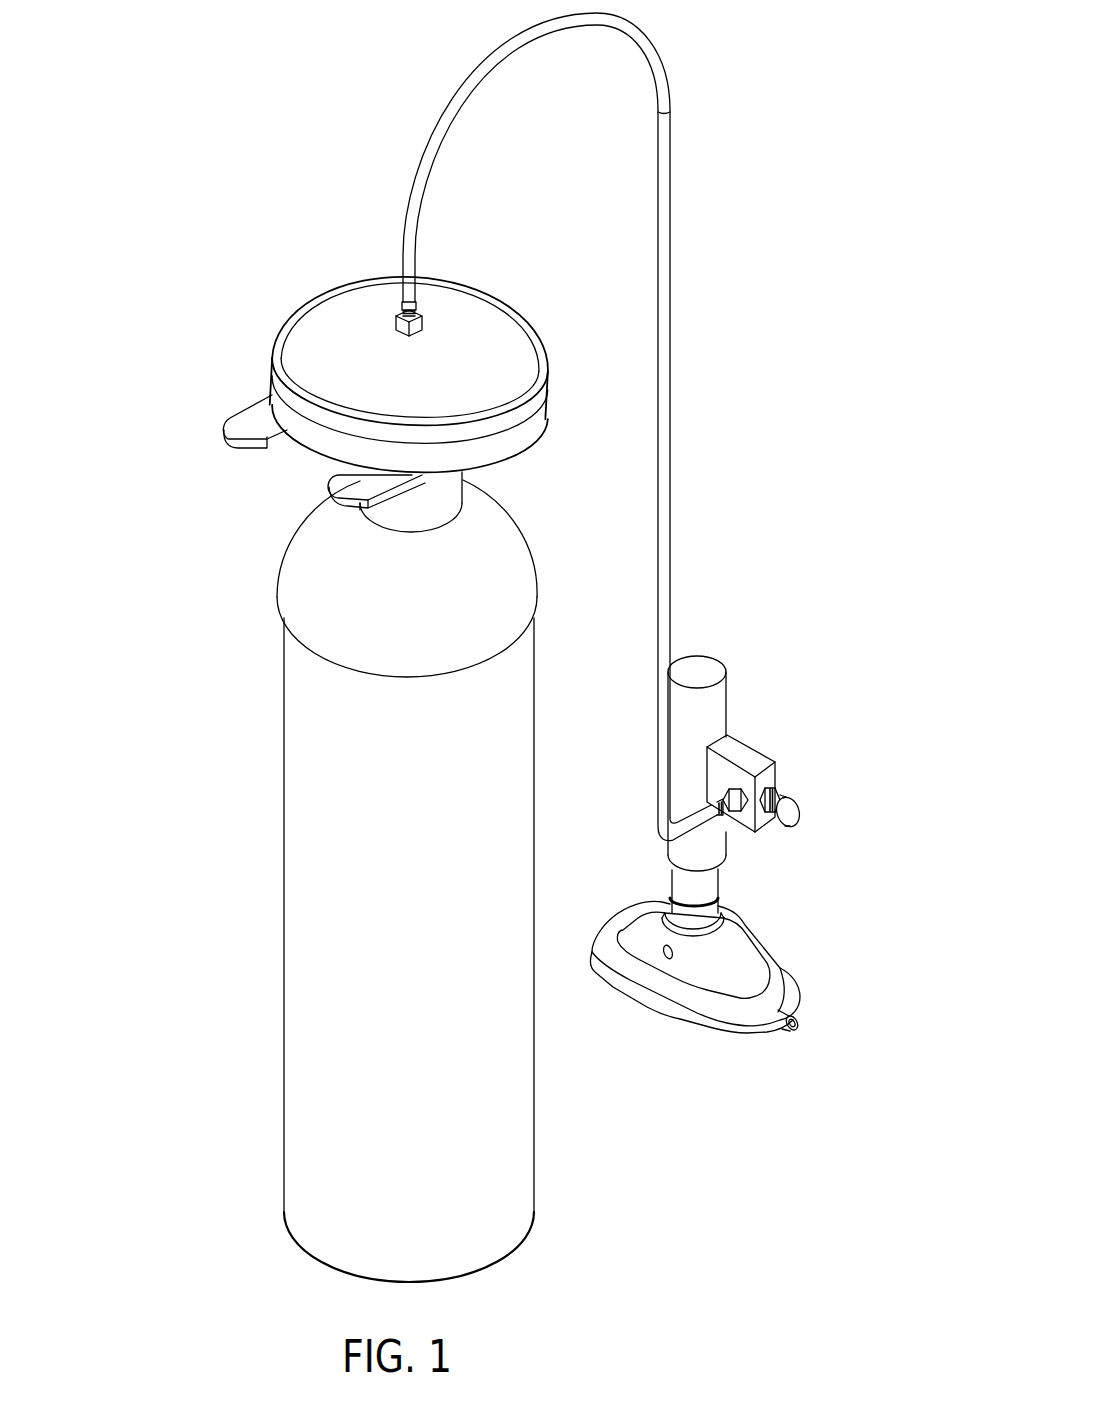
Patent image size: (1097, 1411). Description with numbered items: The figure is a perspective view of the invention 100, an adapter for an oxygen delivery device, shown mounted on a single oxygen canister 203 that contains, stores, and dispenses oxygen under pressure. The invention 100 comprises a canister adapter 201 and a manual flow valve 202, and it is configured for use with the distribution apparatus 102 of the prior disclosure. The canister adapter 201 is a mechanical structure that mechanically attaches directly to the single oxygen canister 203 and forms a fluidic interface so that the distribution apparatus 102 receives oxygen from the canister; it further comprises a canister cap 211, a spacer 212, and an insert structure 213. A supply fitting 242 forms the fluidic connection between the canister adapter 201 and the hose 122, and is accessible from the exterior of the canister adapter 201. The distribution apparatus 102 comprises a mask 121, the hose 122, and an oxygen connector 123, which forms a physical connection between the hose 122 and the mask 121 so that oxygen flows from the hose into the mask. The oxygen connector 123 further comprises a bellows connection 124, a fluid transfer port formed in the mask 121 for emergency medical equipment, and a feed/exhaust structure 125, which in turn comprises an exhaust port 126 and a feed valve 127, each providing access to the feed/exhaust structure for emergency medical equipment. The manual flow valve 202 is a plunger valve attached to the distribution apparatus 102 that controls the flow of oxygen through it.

The invention 100 is at (176, 183).
The distribution apparatus 102 is at (767, 637).
The mask 121 is at (793, 967).
The hose 122 is at (670, 354).
The oxygen connector 123 is at (730, 745).
The bellows connection 124 is at (671, 885).
The feed/exhaust structure 125 is at (777, 768).
The exhaust port 126 is at (757, 832).
The feed valve 127 is at (727, 788).
The canister adapter 201 is at (259, 336).
The manual flow valve 202 is at (800, 808).
The single oxygen canister 203 is at (534, 1173).
The canister cap 211 is at (508, 555).
The spacer 212 is at (239, 440).
The insert structure 213 is at (510, 345).
The supply fitting 242 is at (424, 318).